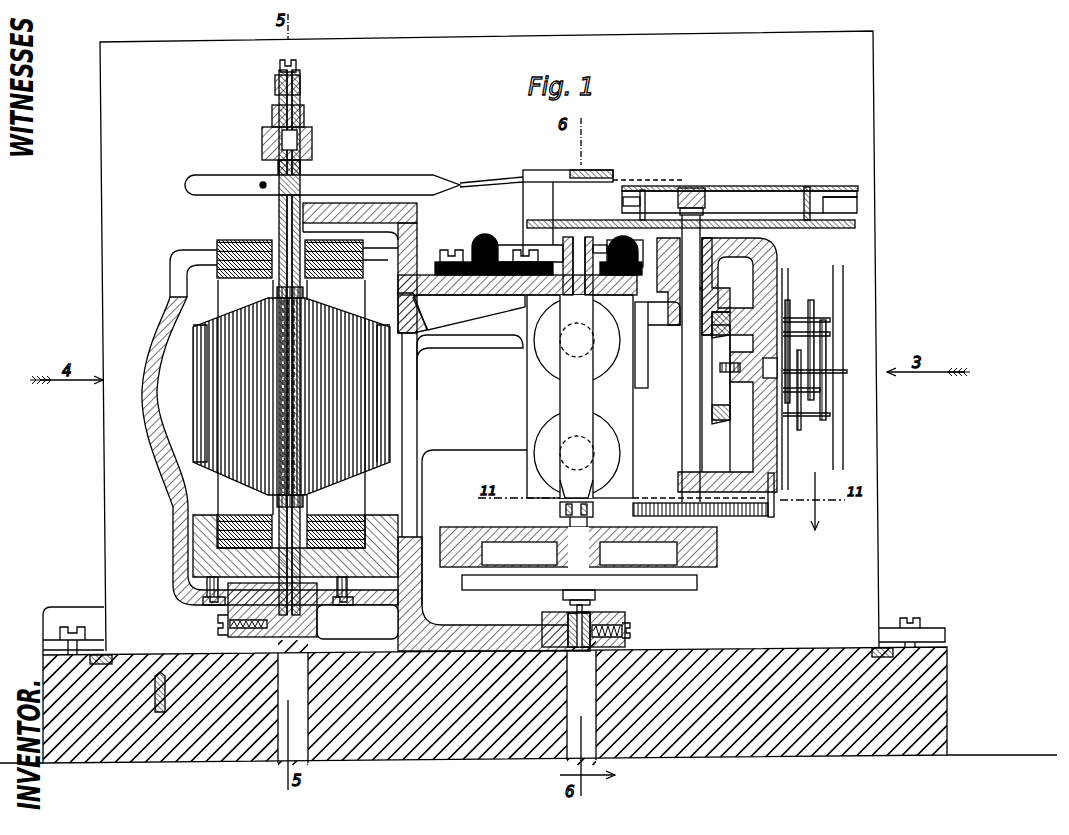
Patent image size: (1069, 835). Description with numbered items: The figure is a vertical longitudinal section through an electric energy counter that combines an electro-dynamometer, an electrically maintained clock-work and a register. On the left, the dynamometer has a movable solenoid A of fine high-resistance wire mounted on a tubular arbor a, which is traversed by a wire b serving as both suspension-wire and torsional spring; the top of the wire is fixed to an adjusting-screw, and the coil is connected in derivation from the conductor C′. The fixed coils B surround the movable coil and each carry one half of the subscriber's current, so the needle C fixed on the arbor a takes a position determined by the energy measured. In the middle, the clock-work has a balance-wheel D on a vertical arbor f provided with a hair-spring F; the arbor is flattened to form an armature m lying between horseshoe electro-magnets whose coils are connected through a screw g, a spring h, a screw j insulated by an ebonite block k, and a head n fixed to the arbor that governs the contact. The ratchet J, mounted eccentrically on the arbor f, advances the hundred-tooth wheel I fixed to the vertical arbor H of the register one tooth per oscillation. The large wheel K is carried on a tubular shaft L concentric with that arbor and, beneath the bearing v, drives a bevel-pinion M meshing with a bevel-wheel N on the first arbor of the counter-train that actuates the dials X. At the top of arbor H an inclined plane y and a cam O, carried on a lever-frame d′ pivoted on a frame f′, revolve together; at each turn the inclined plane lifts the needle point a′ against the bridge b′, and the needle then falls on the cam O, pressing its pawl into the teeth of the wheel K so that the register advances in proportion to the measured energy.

The movable solenoid A is at (193, 410).
The fixed coil B is at (291, 385).
The needle C is at (354, 177).
The conductor C′ is at (155, 703).
The balance-wheel D is at (578, 548).
The hair-spring F is at (587, 580).
The housing G is at (727, 365).
The vertical arbor H is at (684, 345).
The toothed wheel I is at (750, 512).
The ratchet J is at (581, 508).
The large wheel K is at (691, 225).
The tubular shaft L is at (680, 333).
The bevel-pinion M is at (714, 300).
The bevel-wheel N is at (720, 417).
The cam O is at (740, 190).
The dials X is at (820, 377).
The tubular arbor a is at (303, 290).
The suspension wire b is at (288, 218).
The needle point a′ is at (690, 170).
The bridge b′ is at (606, 171).
The lever-frame d′ is at (623, 208).
The balance-wheel arbor f is at (576, 403).
The frame f′ is at (804, 190).
The screw g is at (490, 240).
The spring h is at (530, 253).
The screw j is at (638, 262).
The ebonite block k is at (437, 263).
The armature m is at (577, 396).
The head n is at (600, 253).
The bearing v is at (713, 289).
The inclined plane y is at (845, 202).